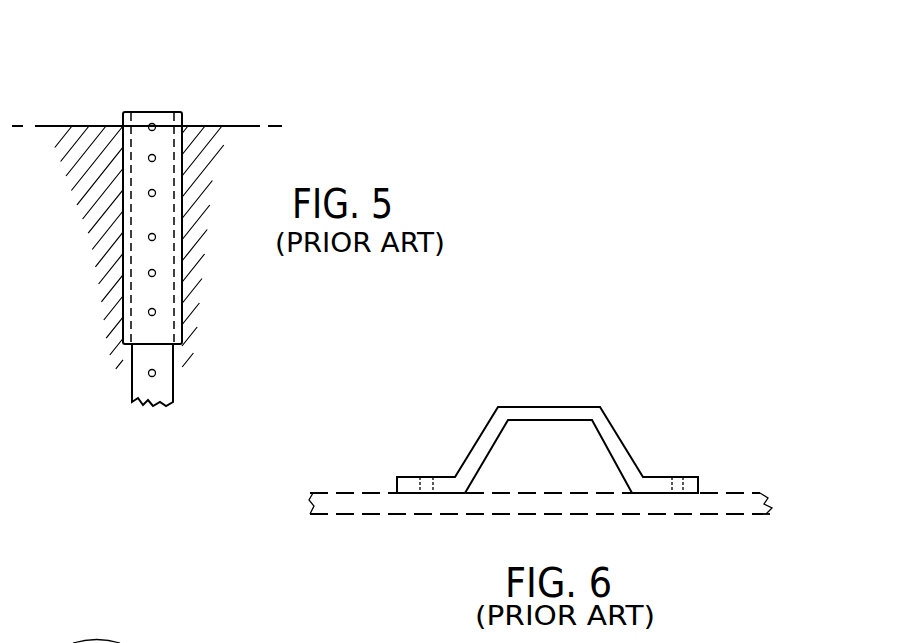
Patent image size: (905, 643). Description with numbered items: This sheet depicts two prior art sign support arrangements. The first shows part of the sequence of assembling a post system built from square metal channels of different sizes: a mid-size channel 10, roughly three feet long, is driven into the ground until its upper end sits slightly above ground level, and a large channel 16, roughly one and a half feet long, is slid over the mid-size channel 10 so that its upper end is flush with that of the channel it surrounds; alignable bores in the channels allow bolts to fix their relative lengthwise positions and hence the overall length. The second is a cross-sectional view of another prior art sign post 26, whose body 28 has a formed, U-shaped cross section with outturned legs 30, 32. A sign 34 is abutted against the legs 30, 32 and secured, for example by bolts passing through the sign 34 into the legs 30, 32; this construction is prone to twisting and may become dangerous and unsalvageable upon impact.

In FIG. 5, the mid-size channel 10 is at (173, 383).
In FIG. 5, the large channel 16 is at (182, 148).
In FIG. 6, the sign post 26 is at (547, 422).
In FIG. 6, the body 28 is at (568, 407).
In FIG. 6, the outturned leg 30 is at (688, 476).
In FIG. 6, the outturned leg 32 is at (408, 477).
In FIG. 6, the sign 34 is at (702, 514).